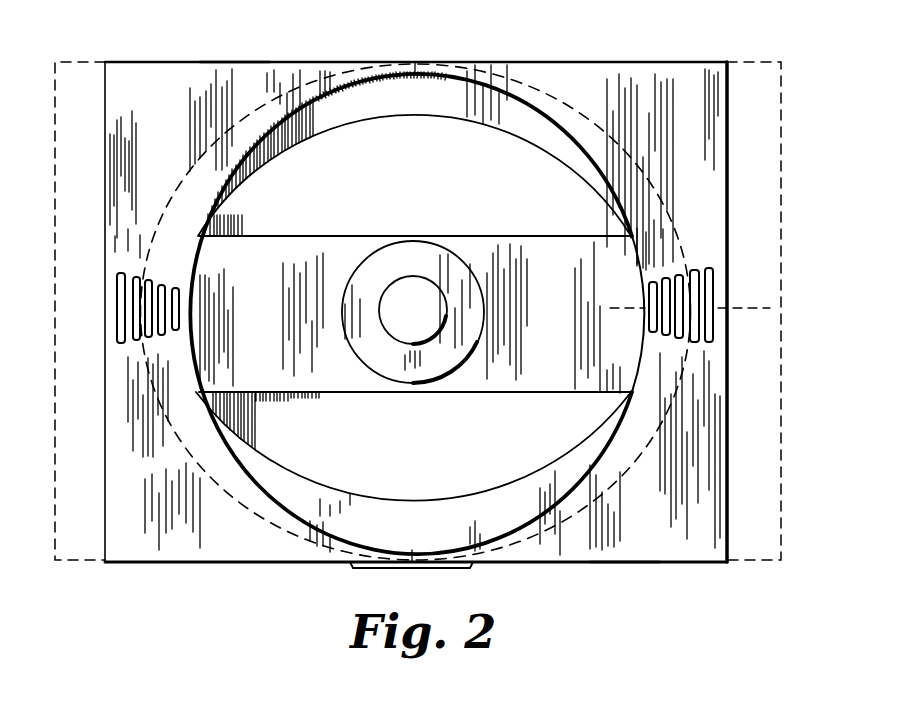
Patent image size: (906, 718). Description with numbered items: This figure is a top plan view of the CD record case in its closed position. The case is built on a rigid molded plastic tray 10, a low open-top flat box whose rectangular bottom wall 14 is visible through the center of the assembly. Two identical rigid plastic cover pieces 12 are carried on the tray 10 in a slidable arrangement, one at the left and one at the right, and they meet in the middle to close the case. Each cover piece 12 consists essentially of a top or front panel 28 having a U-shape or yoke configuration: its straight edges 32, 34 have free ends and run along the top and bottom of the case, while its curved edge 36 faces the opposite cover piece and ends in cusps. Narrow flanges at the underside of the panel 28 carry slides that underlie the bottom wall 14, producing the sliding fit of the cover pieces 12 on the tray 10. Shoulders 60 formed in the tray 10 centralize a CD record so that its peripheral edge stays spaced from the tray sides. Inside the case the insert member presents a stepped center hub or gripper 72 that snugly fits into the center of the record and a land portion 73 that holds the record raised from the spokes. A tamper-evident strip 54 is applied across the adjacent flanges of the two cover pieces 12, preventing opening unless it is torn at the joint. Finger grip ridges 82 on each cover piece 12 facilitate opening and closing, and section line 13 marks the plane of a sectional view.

The tray 10 is at (350, 143).
The cover piece 12 is at (143, 61).
The section line 13 is at (624, 309).
The bottom wall 14 is at (413, 299).
The top panel 28 is at (710, 114).
The straight edge 32 is at (234, 61).
The straight edge 34 is at (587, 61).
The curved edge 36 is at (192, 293).
The tamper-evident strip 54 is at (362, 569).
The shoulder 60 is at (373, 66).
The center hub 72 is at (426, 296).
The land portion 73 is at (437, 360).
The finger grip ridges 82 is at (55, 304).